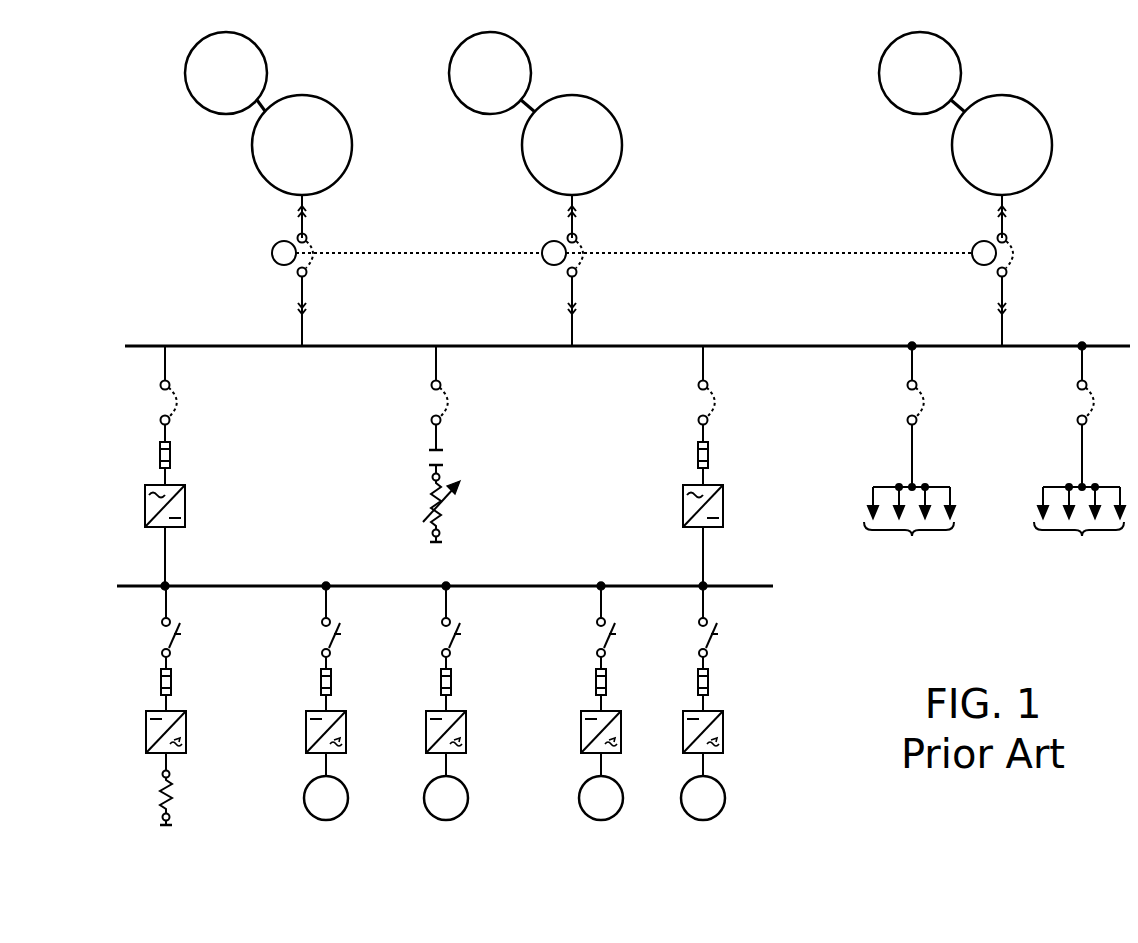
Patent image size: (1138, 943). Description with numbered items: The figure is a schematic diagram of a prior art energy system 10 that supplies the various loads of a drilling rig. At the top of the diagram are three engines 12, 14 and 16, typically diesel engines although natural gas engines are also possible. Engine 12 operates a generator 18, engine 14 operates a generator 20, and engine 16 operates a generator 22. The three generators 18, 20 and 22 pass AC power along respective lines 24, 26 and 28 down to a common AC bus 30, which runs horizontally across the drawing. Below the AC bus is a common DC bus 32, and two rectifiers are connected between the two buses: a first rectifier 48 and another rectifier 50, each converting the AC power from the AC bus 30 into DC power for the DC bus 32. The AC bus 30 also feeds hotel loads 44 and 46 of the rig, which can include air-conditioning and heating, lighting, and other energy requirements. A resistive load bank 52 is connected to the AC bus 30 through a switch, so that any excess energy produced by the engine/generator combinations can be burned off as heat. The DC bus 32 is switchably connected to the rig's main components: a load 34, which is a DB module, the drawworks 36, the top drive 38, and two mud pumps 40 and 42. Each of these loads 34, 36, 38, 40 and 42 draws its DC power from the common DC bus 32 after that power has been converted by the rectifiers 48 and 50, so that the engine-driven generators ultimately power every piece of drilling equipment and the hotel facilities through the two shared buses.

The energy system 10 is at (834, 654).
The engine 12 is at (218, 115).
The engine 14 is at (485, 115).
The engine 16 is at (896, 110).
The generator 18 is at (340, 179).
The generator 20 is at (608, 178).
The generator 22 is at (963, 180).
The line 24 is at (300, 331).
The line 26 is at (575, 334).
The line 28 is at (1001, 327).
The common AC bus 30 is at (487, 345).
The common DC bus 32 is at (504, 586).
The DB module 34 is at (173, 793).
The drawworks 36 is at (347, 784).
The top drive 38 is at (467, 784).
The mud pump 40 is at (622, 784).
The mud pump 42 is at (724, 784).
The hotel load 44 is at (872, 488).
The hotel load 46 is at (1052, 487).
The first rectifier 48 is at (187, 505).
The rectifier 50 is at (725, 512).
The resistive load bank 52 is at (448, 506).